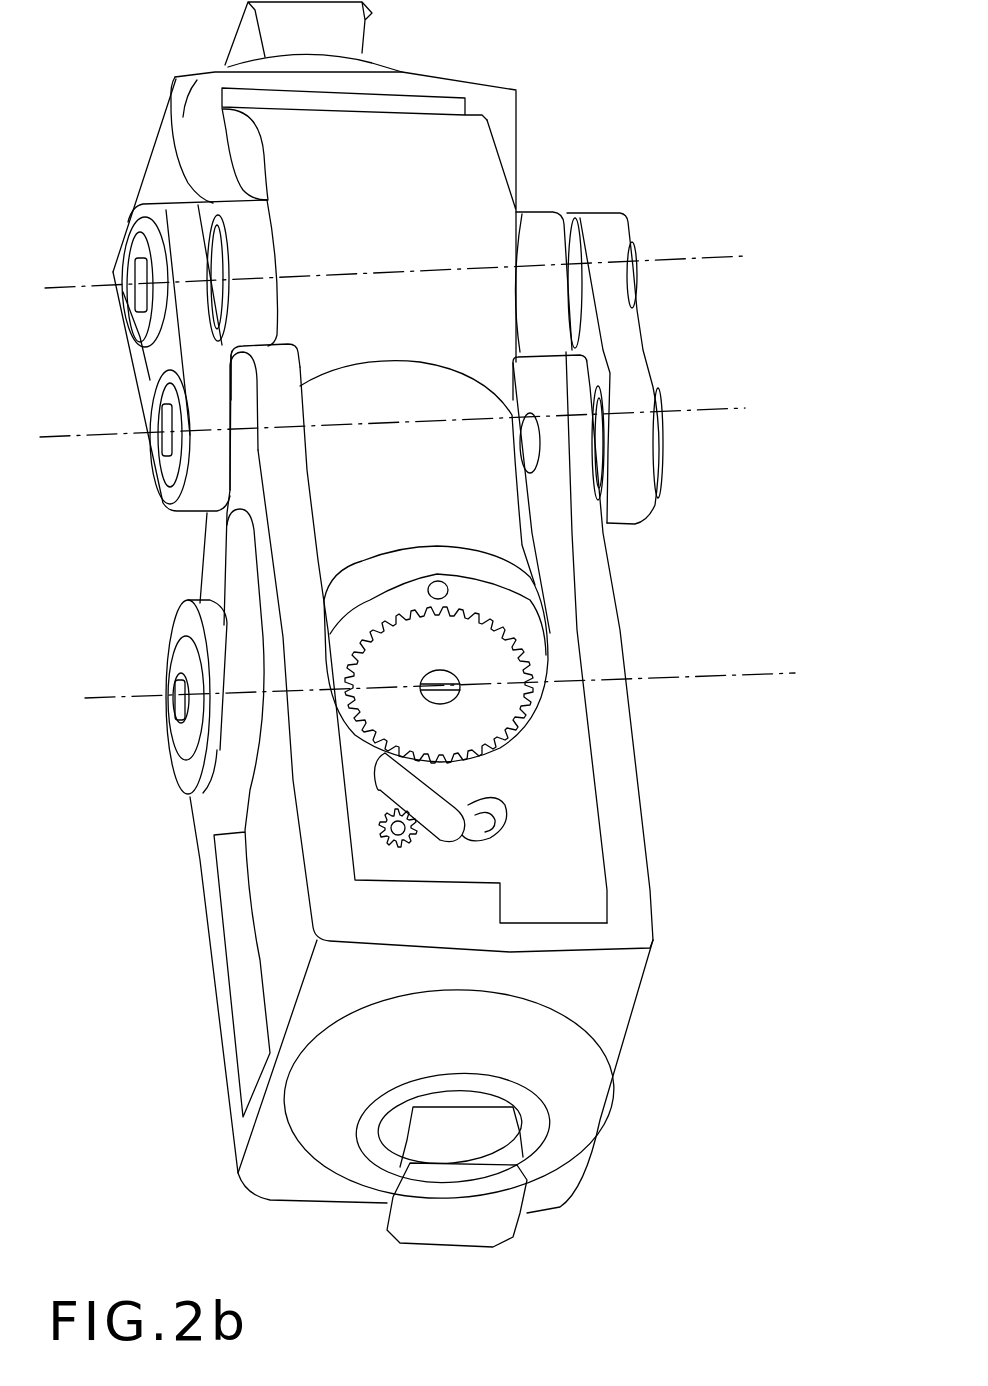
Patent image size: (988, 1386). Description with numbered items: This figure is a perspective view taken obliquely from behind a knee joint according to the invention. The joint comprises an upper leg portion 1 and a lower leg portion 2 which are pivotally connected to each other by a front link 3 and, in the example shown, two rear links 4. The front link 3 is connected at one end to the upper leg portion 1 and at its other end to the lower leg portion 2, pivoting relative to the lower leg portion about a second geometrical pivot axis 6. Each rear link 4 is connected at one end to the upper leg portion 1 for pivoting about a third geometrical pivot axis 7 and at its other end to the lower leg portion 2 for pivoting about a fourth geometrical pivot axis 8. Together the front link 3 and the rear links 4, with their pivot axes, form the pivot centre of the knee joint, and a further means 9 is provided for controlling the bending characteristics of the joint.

The upper leg portion 1 is at (188, 72).
The lower leg portion 2 is at (580, 1090).
The front link 3 is at (430, 173).
The rear link 4 is at (618, 337).
The second geometrical pivot axis 6 is at (720, 676).
The third geometrical pivot axis 7 is at (687, 260).
The fourth geometrical pivot axis 8 is at (713, 412).
The further means for controlling the bending characteristics 9 is at (447, 519).